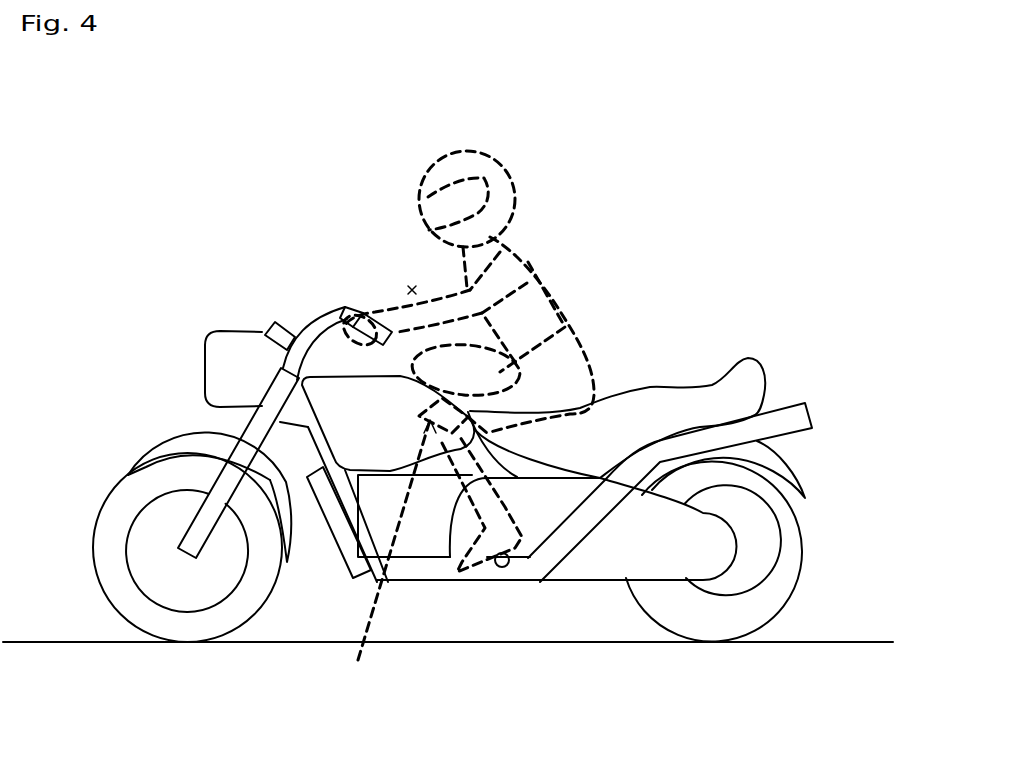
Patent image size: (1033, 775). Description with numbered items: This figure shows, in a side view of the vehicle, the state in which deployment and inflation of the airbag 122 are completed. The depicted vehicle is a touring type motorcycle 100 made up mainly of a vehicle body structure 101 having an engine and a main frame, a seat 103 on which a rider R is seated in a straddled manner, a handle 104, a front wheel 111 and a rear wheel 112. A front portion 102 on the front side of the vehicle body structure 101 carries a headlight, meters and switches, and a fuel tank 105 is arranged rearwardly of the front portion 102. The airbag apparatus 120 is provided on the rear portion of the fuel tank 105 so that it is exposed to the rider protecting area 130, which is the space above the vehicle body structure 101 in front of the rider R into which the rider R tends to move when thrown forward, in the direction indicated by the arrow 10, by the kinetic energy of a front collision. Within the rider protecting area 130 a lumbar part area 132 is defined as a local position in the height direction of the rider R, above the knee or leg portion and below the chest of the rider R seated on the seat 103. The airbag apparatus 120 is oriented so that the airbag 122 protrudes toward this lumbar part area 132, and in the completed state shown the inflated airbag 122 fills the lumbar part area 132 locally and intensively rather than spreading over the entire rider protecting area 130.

The arrow 10 is at (500, 113).
The motorcycle 100 is at (728, 283).
The vehicle body structure 101 is at (433, 597).
The front portion 102 is at (263, 317).
The seat 103 is at (668, 400).
The handle 104 is at (346, 295).
The fuel tank 105 is at (321, 355).
The front wheel 111 is at (182, 627).
The rear wheel 112 is at (703, 627).
The airbag apparatus 120 is at (379, 557).
The airbag 122 is at (411, 320).
The rider protecting area 130 is at (413, 273).
The lumbar part area 132 is at (560, 330).
The rider R is at (538, 266).